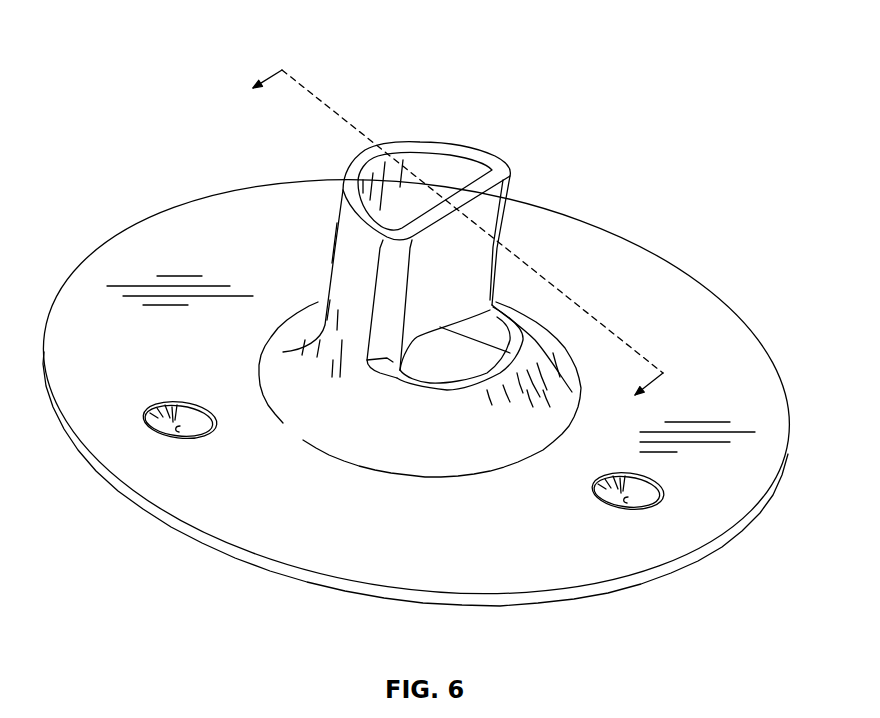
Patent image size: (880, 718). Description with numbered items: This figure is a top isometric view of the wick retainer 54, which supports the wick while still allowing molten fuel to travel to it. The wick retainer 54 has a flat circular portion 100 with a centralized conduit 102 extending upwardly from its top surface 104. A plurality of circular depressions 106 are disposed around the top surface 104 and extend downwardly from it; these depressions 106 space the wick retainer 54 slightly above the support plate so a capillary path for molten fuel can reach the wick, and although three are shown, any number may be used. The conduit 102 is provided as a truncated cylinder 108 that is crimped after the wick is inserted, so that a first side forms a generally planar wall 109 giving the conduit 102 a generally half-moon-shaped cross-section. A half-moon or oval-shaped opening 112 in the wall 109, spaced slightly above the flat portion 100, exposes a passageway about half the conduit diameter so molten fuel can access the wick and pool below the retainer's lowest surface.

The wick retainer 54 is at (170, 47).
The flat circular portion 100 is at (760, 460).
The conduit 102 is at (497, 193).
The top surface 104 is at (300, 557).
The circular depressions 106 is at (170, 429).
The truncated cylinder 108 is at (350, 253).
The planar wall 109 is at (490, 228).
The opening 112 is at (434, 362).